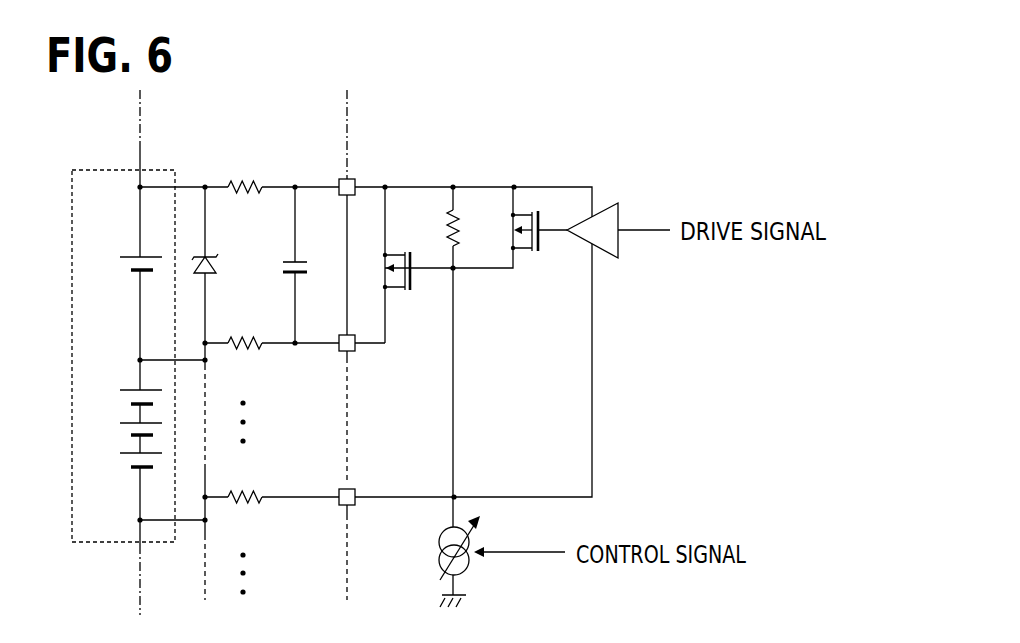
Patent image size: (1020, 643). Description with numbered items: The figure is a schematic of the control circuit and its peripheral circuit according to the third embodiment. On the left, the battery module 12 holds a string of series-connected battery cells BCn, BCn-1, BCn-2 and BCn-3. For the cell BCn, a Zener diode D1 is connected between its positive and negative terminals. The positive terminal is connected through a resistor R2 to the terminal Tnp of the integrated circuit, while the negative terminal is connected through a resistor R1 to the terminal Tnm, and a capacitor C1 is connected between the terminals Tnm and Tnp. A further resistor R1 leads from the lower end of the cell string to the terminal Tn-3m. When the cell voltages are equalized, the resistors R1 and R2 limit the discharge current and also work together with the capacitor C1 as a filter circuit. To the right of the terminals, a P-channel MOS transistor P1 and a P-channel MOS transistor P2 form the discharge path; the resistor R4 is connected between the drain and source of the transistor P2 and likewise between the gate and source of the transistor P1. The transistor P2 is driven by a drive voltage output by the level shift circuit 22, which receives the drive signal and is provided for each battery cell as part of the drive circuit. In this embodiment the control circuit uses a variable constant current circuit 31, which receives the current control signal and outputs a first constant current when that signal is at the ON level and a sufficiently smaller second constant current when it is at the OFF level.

The battery module 12 is at (79, 167).
The level shift circuit 22 is at (601, 209).
The variable constant current circuit 31 is at (439, 548).
The battery cell BCn is at (124, 252).
The battery cell BCn-1 is at (117, 388).
The battery cell BCn-2 is at (117, 418).
The battery cell BCn-3 is at (117, 449).
The resistor R1 is at (246, 350).
The resistor R2 is at (246, 180).
The resistor R4 is at (461, 226).
The Zener diode D1 is at (208, 254).
The capacitor C1 is at (300, 258).
The P-channel MOS transistor P1 is at (398, 250).
The P-channel MOS transistor P2 is at (513, 239).
The terminal Tnp is at (340, 179).
The terminal Tnm is at (340, 352).
The terminal Tn-3m is at (340, 506).